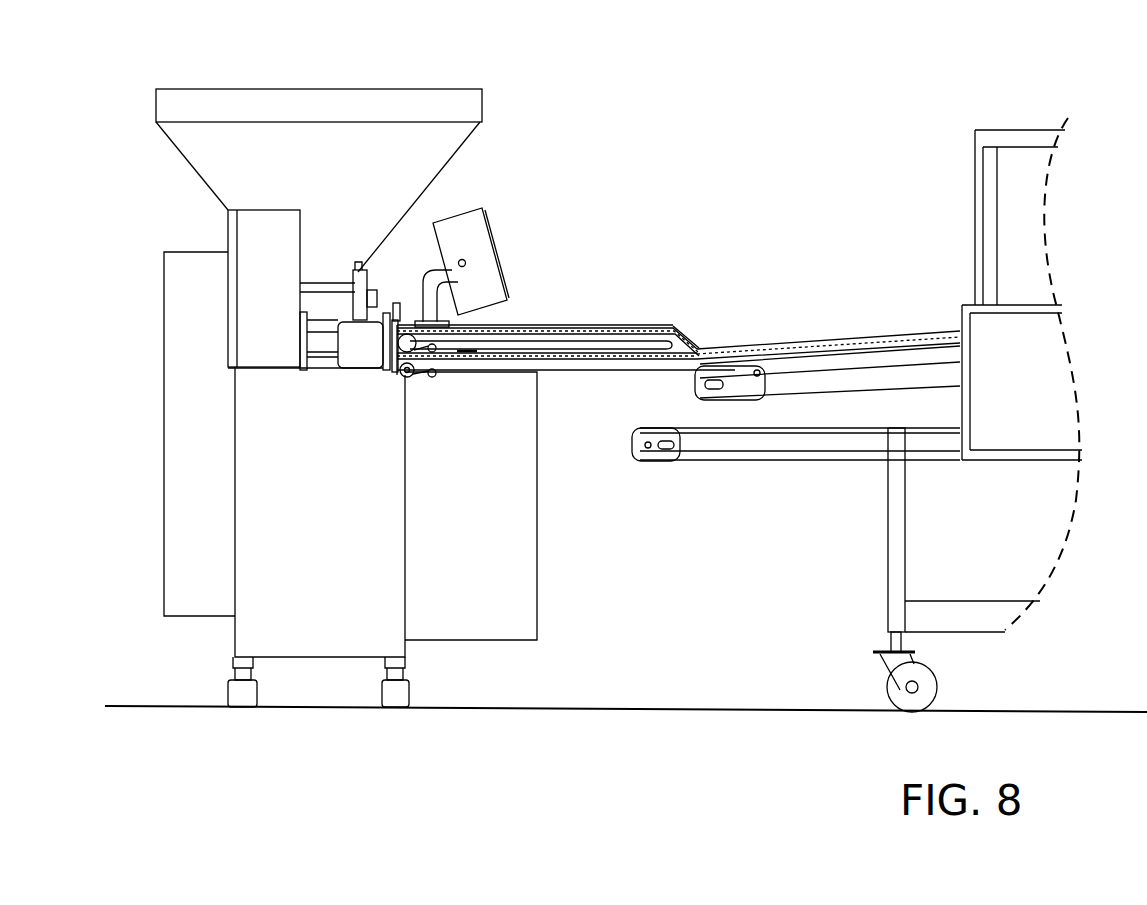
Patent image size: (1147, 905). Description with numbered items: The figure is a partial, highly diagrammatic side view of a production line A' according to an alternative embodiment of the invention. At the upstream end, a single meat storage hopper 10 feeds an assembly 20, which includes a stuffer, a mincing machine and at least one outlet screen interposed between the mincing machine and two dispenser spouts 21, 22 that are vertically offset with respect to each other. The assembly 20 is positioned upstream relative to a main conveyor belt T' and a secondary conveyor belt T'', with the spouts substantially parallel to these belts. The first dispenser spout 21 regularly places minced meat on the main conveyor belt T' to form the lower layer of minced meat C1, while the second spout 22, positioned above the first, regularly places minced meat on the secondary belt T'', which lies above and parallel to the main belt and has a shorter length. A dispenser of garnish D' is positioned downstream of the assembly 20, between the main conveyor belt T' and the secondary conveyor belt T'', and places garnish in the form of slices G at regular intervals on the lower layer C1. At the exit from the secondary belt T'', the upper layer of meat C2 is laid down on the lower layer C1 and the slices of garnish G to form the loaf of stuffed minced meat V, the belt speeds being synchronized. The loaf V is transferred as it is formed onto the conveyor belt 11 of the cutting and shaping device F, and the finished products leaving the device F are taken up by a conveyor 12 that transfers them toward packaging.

The production line A' is at (350, 361).
The meat storage hopper 10 is at (482, 100).
The conveyor belt 11 is at (808, 387).
The conveyor 12 is at (666, 462).
The assembly 20 is at (338, 362).
The first dispenser spout 21 is at (396, 384).
The second dispenser spout 22 is at (396, 320).
The dispenser of garnish D' is at (535, 380).
The lower layer of minced meat C1 is at (552, 362).
The upper layer of minced meat C2 is at (583, 328).
The secondary conveyor belt T'' is at (535, 311).
The main conveyor belt T' is at (566, 391).
The slices of garnish G is at (652, 347).
The loaf of stuffed minced meat V is at (795, 344).
The cutting and shaping device F is at (975, 262).